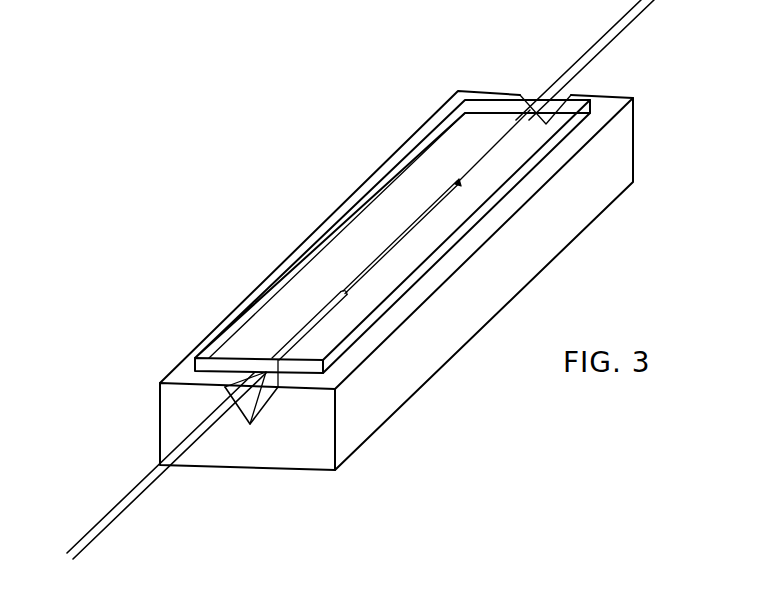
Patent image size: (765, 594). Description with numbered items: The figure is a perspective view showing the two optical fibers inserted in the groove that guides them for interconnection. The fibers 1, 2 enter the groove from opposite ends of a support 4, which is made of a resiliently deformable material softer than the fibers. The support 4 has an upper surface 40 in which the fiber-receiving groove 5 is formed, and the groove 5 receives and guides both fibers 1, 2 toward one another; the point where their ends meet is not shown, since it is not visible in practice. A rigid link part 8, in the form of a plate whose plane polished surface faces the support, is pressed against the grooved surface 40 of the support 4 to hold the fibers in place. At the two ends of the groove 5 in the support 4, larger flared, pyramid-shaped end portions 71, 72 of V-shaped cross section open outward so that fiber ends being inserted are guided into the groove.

The fiber 1 is at (109, 525).
The fiber 2 is at (655, 5).
The support 4 is at (613, 168).
The upper surface 40 is at (586, 134).
The fiber-receiving groove 5 is at (352, 280).
The rigid link part 8 is at (468, 225).
The flared end portion 71 is at (250, 405).
The flared end portion 72 is at (524, 98).